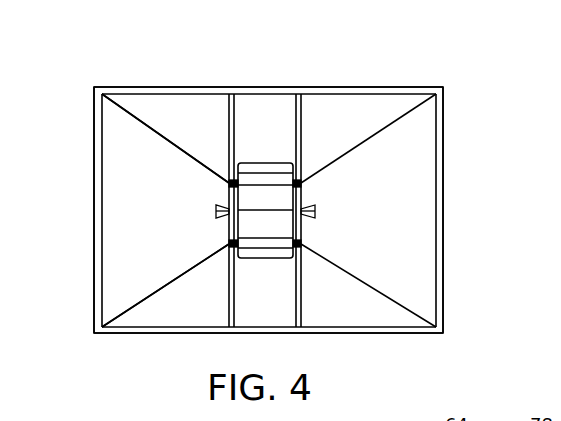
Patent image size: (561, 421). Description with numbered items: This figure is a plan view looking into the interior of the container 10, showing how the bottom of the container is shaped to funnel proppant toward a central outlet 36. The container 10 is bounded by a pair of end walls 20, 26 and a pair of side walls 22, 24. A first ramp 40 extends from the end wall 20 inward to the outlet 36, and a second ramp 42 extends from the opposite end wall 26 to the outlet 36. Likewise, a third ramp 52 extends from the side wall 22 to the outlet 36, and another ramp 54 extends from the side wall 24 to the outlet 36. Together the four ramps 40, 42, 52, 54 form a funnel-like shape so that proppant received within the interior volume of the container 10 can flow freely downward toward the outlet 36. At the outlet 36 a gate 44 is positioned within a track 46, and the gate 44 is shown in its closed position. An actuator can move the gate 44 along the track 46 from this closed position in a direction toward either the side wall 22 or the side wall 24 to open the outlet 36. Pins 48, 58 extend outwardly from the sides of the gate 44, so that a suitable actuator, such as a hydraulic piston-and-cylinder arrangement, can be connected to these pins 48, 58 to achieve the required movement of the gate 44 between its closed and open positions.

The container 10 is at (222, 79).
The end wall 20 is at (101, 192).
The side wall 22 is at (152, 334).
The side wall 24 is at (327, 87).
The end wall 26 is at (444, 183).
The outlet 36 is at (298, 171).
The first ramp 40 is at (169, 225).
The second ramp 42 is at (392, 217).
The gate 44 is at (263, 205).
The track 46 is at (295, 104).
The pin 48 is at (216, 206).
The third ramp 52 is at (207, 307).
The ramp 54 is at (195, 122).
The pin 58 is at (316, 213).